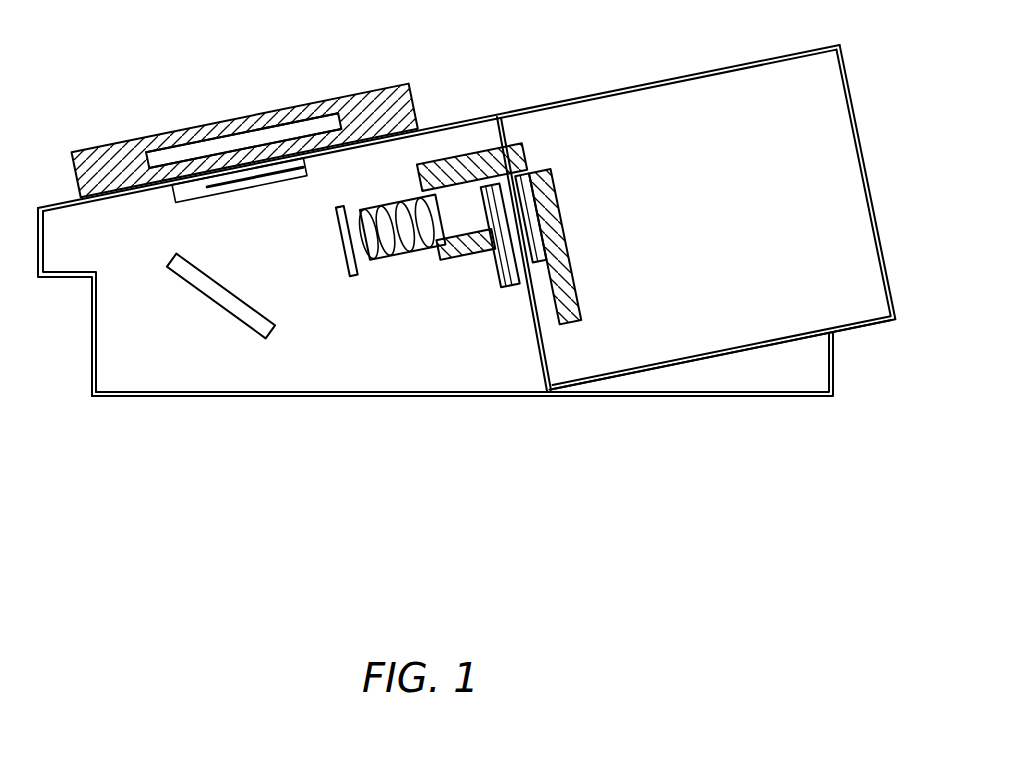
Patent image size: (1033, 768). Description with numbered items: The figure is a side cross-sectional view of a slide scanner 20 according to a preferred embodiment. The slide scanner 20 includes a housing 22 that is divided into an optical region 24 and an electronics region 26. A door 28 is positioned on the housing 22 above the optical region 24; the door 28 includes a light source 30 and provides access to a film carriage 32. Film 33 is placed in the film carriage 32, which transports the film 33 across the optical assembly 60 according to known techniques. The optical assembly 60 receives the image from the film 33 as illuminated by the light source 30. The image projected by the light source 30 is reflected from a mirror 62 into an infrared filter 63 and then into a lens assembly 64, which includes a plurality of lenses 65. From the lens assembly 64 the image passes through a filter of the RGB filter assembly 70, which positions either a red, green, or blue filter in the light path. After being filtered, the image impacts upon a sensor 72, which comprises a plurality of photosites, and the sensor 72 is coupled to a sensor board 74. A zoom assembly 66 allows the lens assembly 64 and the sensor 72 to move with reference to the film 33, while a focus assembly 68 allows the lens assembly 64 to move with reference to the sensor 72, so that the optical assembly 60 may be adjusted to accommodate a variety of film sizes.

The slide scanner 20 is at (100, 210).
The housing 22 is at (466, 263).
The optical region 24 is at (462, 394).
The electronics region 26 is at (722, 382).
The door 28 is at (245, 141).
The light source 30 is at (242, 111).
The film carriage 32 is at (261, 101).
The film 33 is at (239, 201).
The optical assembly 60 is at (352, 302).
The mirror 62 is at (221, 309).
The infrared filter 63 is at (315, 241).
The lens assembly 64 is at (396, 213).
The lenses 65 is at (397, 258).
The zoom assembly 66 is at (472, 133).
The focus assembly 68 is at (460, 283).
The RGB filter assembly 70 is at (500, 274).
The sensor 72 is at (558, 268).
The sensor board 74 is at (583, 246).